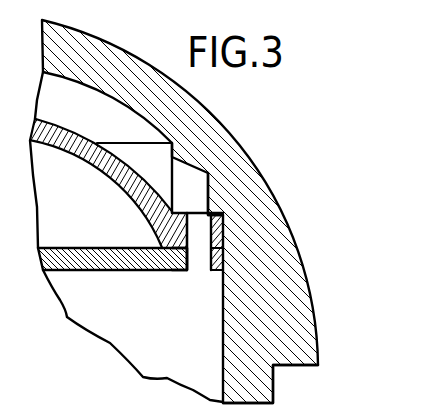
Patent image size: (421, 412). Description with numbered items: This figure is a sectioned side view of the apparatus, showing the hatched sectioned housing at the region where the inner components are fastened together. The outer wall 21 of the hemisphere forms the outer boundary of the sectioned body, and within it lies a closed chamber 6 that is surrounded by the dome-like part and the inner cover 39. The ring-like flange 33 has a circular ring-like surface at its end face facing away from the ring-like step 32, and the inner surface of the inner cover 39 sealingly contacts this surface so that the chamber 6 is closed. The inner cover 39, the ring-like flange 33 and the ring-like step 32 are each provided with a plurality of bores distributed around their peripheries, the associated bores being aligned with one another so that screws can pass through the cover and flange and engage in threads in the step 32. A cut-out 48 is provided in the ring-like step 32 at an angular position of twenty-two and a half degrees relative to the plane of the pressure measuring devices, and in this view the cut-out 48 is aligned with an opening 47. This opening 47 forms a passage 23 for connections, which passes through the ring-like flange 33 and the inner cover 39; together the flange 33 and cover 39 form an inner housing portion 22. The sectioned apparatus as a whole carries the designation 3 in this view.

The housing body 3 is at (265, 168).
The closed chamber 6 is at (64, 206).
The outer wall of the hemisphere 21 is at (310, 289).
The inner housing portion 22 is at (143, 244).
The passage 23 is at (186, 272).
The ring-like step 32 is at (222, 215).
The ring-like flange 33 is at (219, 230).
The inner cover 39 is at (87, 266).
The opening 47 is at (203, 271).
The cut-out 48 is at (203, 183).